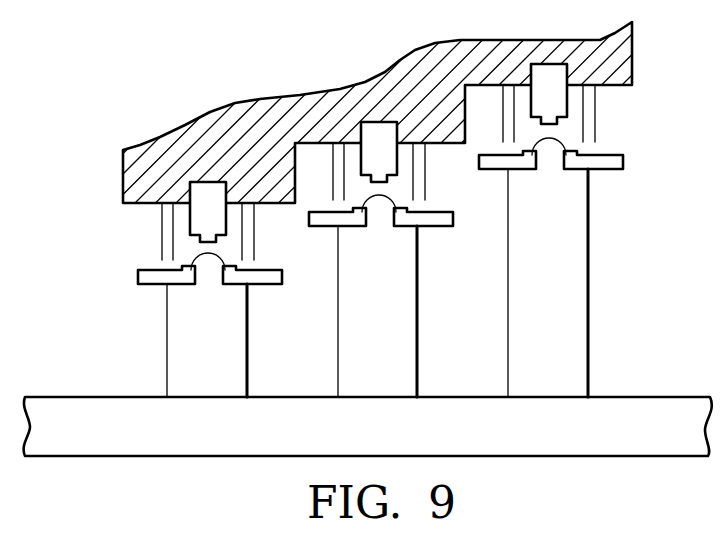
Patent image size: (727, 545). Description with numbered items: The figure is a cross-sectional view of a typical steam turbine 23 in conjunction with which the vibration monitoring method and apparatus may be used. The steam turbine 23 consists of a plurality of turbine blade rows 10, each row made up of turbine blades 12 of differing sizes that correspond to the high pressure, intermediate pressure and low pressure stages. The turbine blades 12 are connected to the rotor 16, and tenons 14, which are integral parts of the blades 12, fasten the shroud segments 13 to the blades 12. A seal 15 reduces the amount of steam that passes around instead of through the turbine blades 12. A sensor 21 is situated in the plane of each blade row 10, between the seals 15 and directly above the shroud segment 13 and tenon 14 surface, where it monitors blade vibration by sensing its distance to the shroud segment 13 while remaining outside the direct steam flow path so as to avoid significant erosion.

The turbine blade row 10 is at (338, 358).
The turbine blades 12 is at (247, 333).
The shroud segments 13 is at (265, 268).
The tenons 14 is at (210, 261).
The seal 15 is at (173, 252).
The rotor 16 is at (657, 397).
The sensor 21 is at (188, 219).
The steam turbine 23 is at (100, 357).